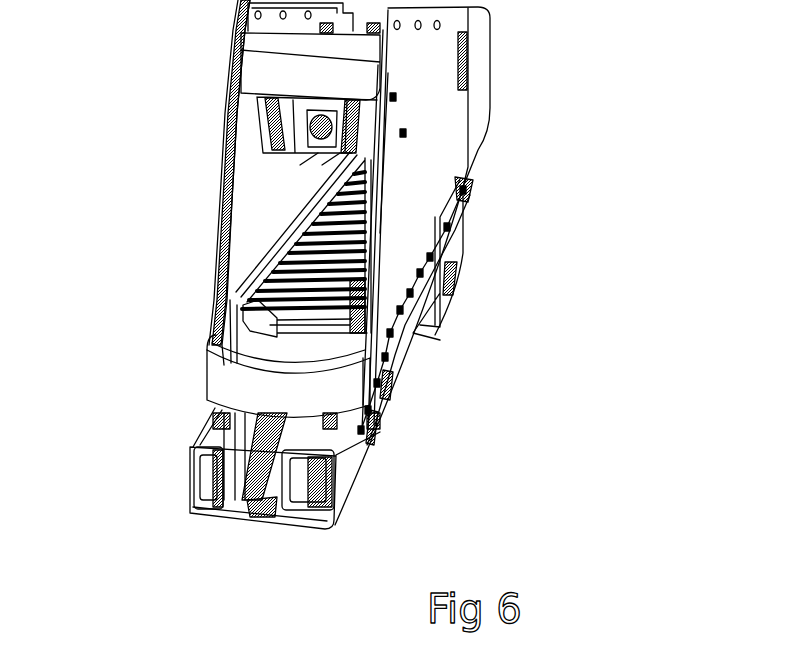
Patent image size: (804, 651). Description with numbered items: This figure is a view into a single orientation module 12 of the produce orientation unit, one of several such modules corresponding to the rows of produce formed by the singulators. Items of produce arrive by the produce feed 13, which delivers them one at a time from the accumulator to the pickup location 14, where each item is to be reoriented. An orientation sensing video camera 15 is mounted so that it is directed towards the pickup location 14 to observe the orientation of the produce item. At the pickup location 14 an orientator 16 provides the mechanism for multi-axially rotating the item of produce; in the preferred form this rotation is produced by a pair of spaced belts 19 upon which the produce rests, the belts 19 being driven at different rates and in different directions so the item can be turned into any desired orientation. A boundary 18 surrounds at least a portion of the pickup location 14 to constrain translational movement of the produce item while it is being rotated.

The orientation module 12 is at (537, 210).
The produce feed 13 is at (293, 275).
The pickup location 14 is at (266, 349).
The orientation sensing video camera 15 is at (313, 130).
The orientator 16 is at (226, 568).
The boundary 18 is at (320, 393).
The spaced belts 19 is at (203, 510).